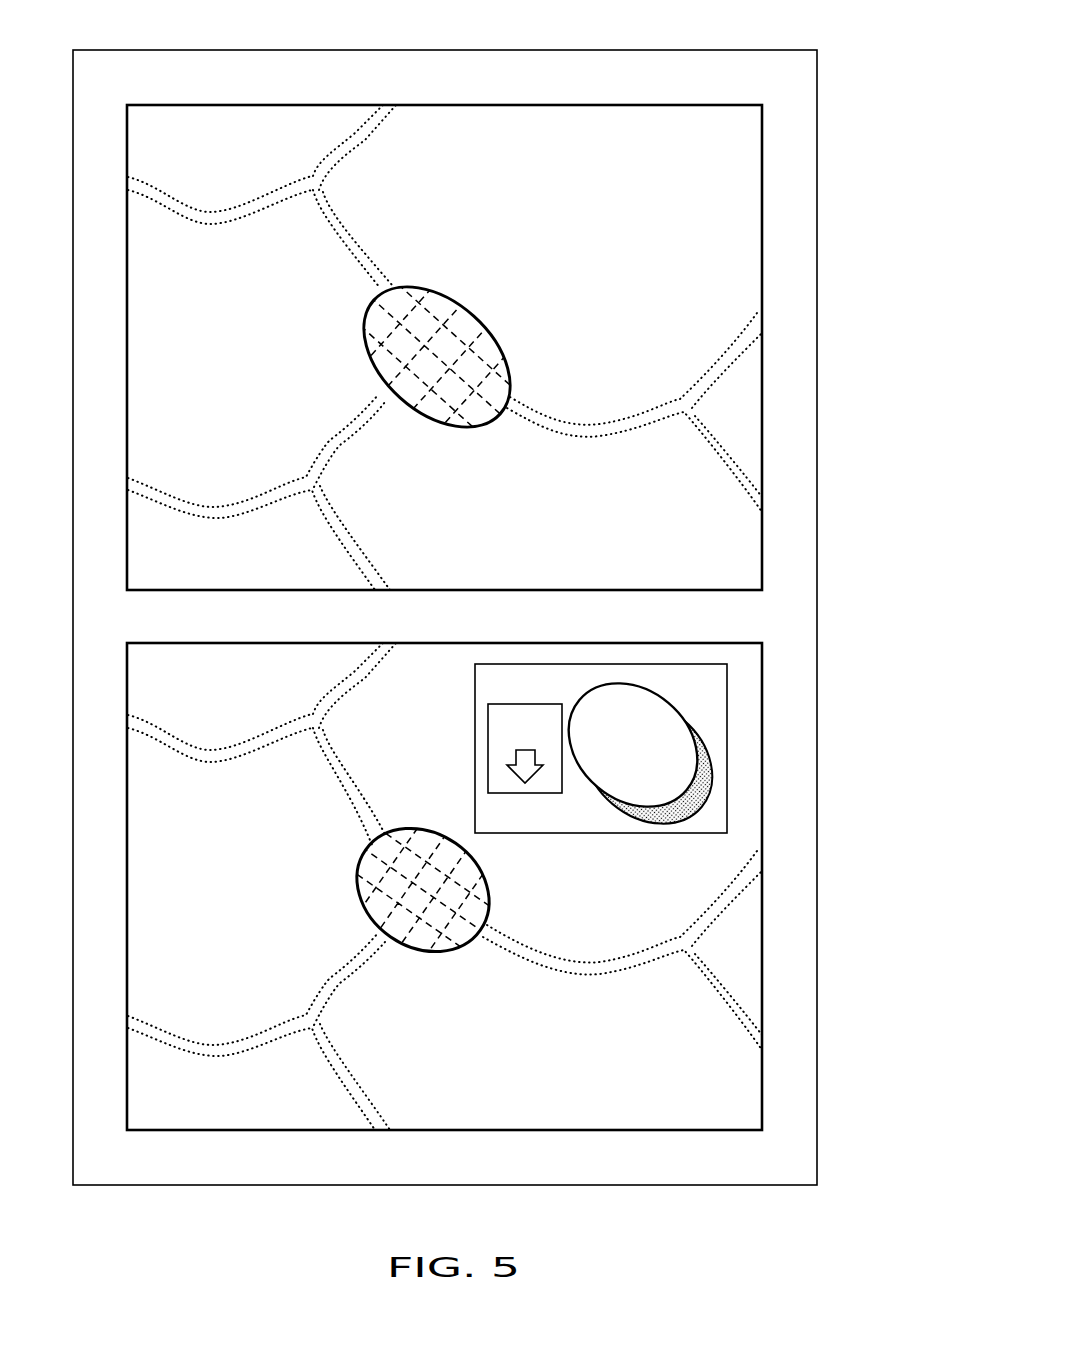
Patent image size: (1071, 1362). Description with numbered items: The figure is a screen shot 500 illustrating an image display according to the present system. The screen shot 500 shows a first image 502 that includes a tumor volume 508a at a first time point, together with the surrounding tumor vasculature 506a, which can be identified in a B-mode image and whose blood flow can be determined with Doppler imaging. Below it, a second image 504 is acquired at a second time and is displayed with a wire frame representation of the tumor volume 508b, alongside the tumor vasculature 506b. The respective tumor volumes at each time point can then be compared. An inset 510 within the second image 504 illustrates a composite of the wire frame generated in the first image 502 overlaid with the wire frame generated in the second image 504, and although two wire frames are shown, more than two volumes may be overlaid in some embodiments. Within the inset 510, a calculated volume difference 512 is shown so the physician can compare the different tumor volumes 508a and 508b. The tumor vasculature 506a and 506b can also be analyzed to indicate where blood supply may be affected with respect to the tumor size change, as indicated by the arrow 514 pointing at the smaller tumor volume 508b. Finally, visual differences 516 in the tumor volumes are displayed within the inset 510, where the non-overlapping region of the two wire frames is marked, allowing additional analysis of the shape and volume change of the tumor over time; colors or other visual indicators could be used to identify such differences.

The screen shot 500 is at (742, 50).
The first image 502 is at (700, 105).
The second image 504 is at (700, 643).
The tumor vasculature 506a is at (320, 160).
The tumor vasculature 506b is at (320, 698).
The tumor volume 508a is at (463, 428).
The tumor volume 508b is at (440, 953).
The inset 510 is at (475, 687).
The calculated volume difference 512 is at (488, 778).
The arrow 514 is at (497, 914).
The visual differences 516 is at (683, 810).